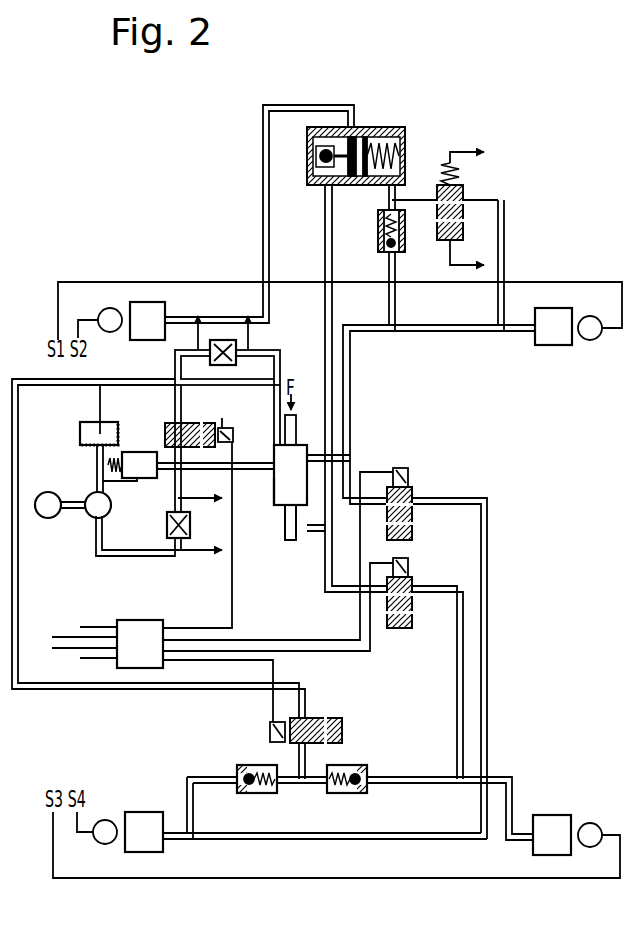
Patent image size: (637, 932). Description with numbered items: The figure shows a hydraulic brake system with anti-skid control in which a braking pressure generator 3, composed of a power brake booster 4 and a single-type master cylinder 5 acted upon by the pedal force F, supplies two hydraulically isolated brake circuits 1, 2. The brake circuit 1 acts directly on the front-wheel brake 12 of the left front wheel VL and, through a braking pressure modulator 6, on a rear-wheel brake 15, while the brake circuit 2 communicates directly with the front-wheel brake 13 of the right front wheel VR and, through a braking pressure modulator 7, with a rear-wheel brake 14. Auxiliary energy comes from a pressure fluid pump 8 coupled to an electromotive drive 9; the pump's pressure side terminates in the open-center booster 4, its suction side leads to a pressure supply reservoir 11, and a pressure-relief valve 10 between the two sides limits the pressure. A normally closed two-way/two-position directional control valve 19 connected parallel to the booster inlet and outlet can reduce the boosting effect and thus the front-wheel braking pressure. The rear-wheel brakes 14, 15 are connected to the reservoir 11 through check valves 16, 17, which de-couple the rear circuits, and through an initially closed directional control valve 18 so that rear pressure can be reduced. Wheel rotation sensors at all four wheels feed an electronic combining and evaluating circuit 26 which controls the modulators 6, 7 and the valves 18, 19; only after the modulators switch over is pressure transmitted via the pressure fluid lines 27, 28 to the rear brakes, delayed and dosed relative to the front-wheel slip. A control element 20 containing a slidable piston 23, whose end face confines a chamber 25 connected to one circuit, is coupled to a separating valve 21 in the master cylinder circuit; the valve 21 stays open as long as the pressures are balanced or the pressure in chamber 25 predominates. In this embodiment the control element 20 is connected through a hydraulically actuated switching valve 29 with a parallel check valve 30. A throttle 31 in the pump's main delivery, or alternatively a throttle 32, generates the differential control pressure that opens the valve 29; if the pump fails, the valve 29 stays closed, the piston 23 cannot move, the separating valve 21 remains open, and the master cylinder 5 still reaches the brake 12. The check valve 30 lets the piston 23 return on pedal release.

The brake circuit 1 is at (325, 402).
The brake circuit 2 is at (350, 402).
The braking pressure generator 3 is at (273, 460).
The power brake booster 4 is at (275, 492).
The master cylinder 5 is at (285, 530).
The braking pressure modulator 6 is at (412, 607).
The braking pressure modulator 7 is at (412, 518).
The pressure fluid pump 8 is at (88, 492).
The electromotive drive 9 is at (45, 492).
The pressure-relief valve 10 is at (141, 455).
The pressure supply reservoir 11 is at (80, 434).
The front-wheel brake 12 is at (148, 302).
The front-wheel brake 13 is at (553, 308).
The rear-wheel brake 14 is at (143, 853).
The rear-wheel brake 15 is at (553, 856).
The check valve 16 is at (257, 793).
The check valve 17 is at (349, 793).
The two-way/two-position directional control valve 18 is at (343, 729).
The two-way/two-position directional control valve 19 is at (190, 422).
The control element 20 is at (364, 152).
The separating valve 21 is at (318, 186).
The piston 23 is at (363, 185).
The chamber 25 is at (406, 139).
The electronic combining and evaluating circuit 26 is at (137, 668).
The pressure fluid line 27 is at (457, 724).
The pressure fluid line 28 is at (487, 724).
The switching valve 29 is at (437, 228).
The check valve 30 is at (386, 240).
The throttle 31 is at (166, 525).
The throttle 32 is at (236, 370).